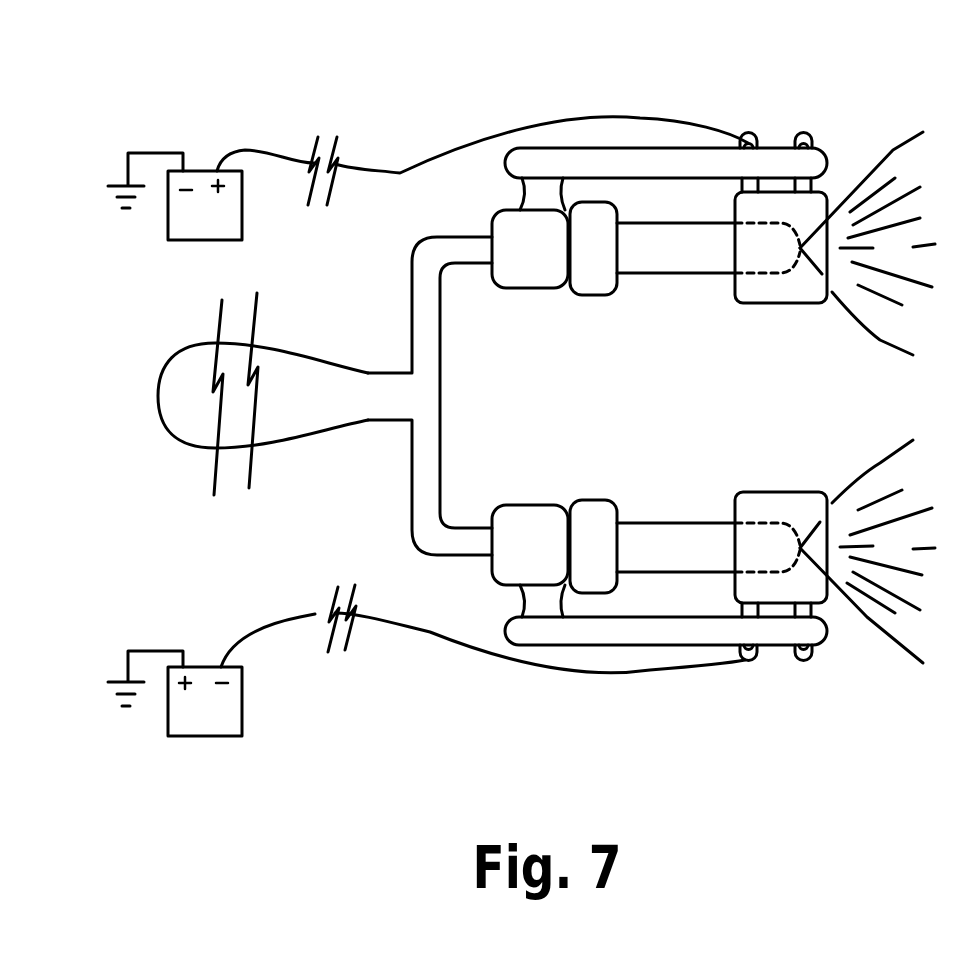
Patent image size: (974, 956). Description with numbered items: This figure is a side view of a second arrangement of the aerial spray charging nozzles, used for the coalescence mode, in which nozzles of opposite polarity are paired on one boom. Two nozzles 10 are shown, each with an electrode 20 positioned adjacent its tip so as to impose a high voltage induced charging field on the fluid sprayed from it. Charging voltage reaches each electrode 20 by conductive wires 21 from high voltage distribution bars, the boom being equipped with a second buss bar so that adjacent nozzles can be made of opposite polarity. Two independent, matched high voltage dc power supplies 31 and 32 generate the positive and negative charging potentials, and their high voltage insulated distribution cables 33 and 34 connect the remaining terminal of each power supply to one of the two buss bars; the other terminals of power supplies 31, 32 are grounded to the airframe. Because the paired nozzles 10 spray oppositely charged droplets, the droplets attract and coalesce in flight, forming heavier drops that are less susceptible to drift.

The nozzle 10 is at (672, 283).
The electrode 20 is at (780, 303).
The conductive wire 21 is at (637, 115).
The high voltage dc power supply 31 is at (178, 240).
The high voltage dc power supply 32 is at (207, 736).
The high voltage insulated distribution cable 33 is at (245, 148).
The high voltage insulated distribution cable 34 is at (290, 620).